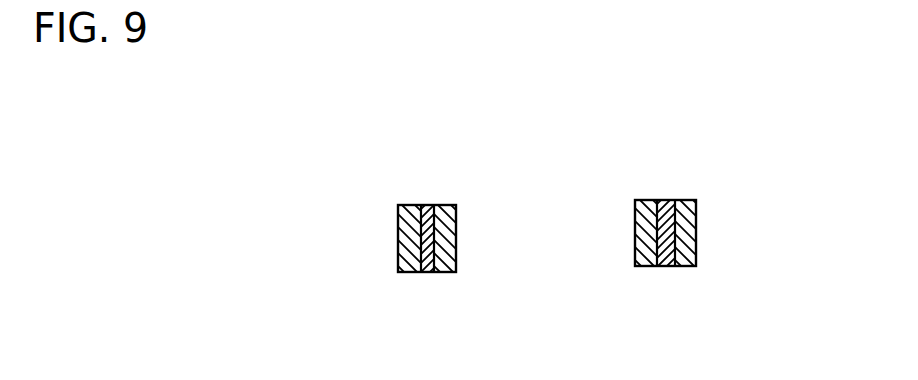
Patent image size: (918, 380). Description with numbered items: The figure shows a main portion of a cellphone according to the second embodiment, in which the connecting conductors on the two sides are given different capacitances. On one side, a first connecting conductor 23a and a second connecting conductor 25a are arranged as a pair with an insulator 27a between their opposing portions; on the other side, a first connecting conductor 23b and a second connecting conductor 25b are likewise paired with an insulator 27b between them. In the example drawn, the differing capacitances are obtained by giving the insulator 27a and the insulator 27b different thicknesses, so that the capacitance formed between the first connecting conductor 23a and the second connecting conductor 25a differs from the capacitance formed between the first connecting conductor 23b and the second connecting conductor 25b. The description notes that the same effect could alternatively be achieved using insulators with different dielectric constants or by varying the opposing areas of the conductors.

The first connecting conductor 23a is at (442, 273).
The second connecting conductor 25a is at (400, 243).
The insulator 27a is at (424, 205).
The first connecting conductor 23b is at (643, 267).
The second connecting conductor 25b is at (694, 228).
The insulator 27b is at (663, 200).